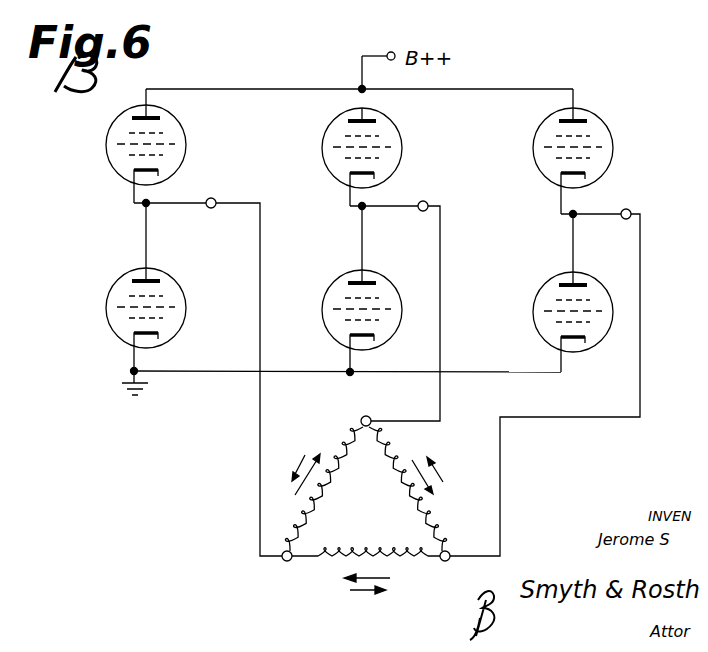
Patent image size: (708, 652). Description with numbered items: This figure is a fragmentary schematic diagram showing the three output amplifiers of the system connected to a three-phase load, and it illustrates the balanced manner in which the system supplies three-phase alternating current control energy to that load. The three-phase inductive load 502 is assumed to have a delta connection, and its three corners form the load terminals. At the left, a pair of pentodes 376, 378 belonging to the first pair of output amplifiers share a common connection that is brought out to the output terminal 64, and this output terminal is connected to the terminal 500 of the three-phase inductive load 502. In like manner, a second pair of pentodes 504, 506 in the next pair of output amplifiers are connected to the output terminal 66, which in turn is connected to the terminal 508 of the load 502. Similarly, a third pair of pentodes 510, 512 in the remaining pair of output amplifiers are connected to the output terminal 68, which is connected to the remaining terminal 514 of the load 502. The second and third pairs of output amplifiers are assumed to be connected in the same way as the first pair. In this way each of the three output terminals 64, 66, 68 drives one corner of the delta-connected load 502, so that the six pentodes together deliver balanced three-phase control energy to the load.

The pentode 376 is at (109, 129).
The pentode 378 is at (107, 290).
The pentode 504 is at (324, 292).
The pentode 506 is at (326, 128).
The pentode 510 is at (537, 292).
The pentode 512 is at (536, 129).
The output terminal 64 is at (215, 199).
The output terminal 66 is at (427, 202).
The output terminal 68 is at (630, 210).
The terminal 500 is at (284, 560).
The terminal 508 is at (369, 416).
The terminal 514 is at (445, 561).
The three-phase inductive load 502 is at (374, 518).